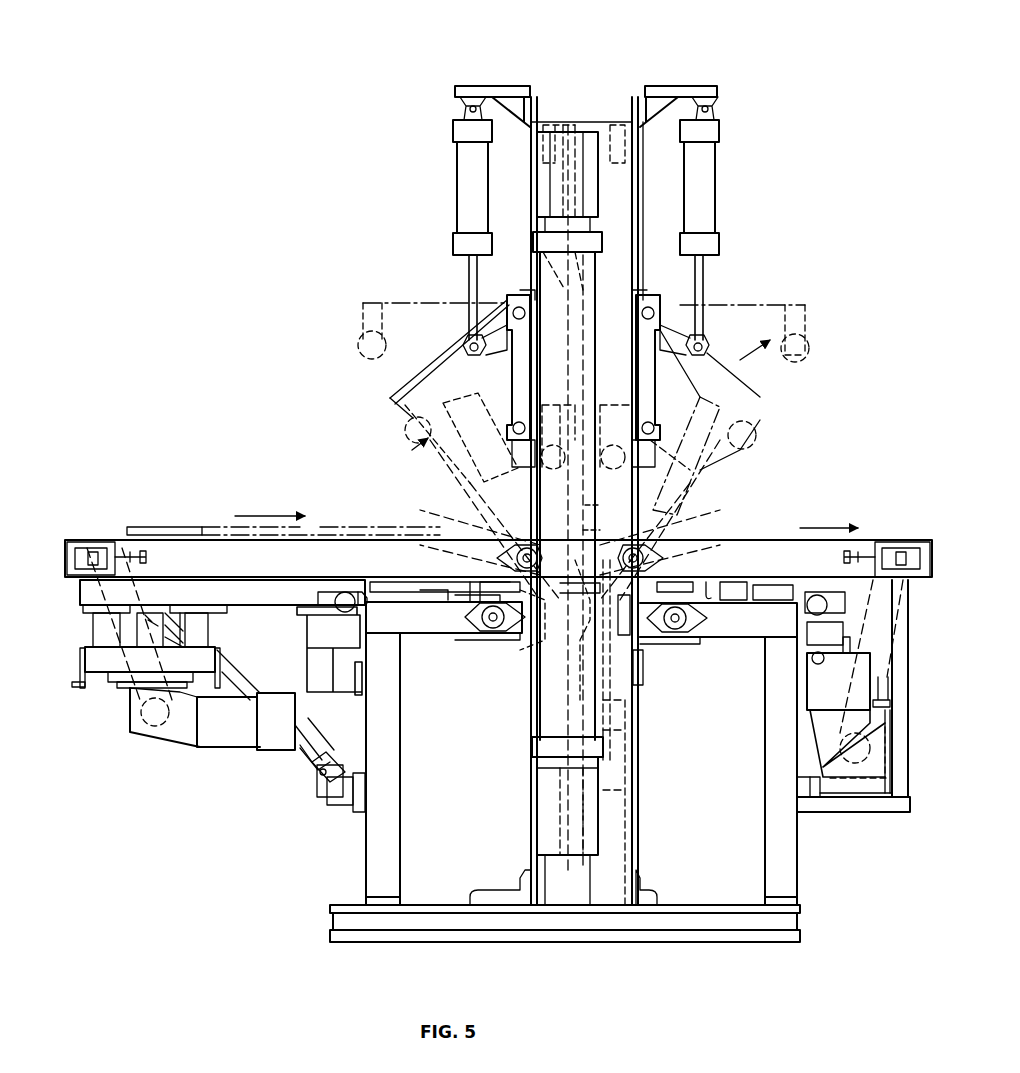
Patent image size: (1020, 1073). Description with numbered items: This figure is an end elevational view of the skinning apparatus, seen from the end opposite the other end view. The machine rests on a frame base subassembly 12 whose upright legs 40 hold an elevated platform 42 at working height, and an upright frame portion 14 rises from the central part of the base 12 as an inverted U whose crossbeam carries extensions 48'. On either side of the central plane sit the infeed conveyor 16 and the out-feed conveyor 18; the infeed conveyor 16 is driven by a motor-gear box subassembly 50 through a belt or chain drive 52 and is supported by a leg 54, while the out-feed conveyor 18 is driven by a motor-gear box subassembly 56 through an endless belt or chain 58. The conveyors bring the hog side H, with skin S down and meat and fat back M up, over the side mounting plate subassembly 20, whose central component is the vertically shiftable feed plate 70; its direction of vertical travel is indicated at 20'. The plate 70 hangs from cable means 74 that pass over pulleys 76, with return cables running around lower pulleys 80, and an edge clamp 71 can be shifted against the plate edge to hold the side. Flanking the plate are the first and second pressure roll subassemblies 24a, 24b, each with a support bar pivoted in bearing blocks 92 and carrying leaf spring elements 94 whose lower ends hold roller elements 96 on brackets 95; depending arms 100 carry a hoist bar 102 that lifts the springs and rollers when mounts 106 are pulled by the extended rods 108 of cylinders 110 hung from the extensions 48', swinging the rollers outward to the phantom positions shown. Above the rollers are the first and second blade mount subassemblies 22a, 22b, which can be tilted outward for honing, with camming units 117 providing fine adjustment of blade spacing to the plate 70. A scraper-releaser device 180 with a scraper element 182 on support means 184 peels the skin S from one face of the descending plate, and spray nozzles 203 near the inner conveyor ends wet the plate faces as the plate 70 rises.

The frame base subassembly 12 is at (405, 855).
The upright frame portion 14 is at (578, 114).
The infeed conveyor subassembly 16 is at (498, 576).
The out-feed conveyor subassembly 18 is at (748, 540).
The side mounting plate subassembly 20 is at (605, 660).
The spindle axis direction 20' is at (572, 513).
The first blade mount subassembly 22a is at (450, 424).
The second blade mount subassembly 22b is at (722, 425).
The first pressure roll subassembly 24a is at (515, 365).
The second pressure roll subassembly 24b is at (800, 305).
The upright legs 40 is at (398, 730).
The elevated platform 42 is at (425, 620).
The extensions of frame member 48' is at (585, 82).
The electrical motor-gear box subassembly 50 is at (222, 728).
The belt or chain drive 52 is at (133, 697).
The leg 54 is at (230, 668).
The motor-gear box subassembly 56 is at (827, 700).
The endless belt or chain 58 is at (895, 640).
The feed plate 70 is at (640, 527).
The edge clamp 71 is at (640, 500).
The cable means 74 is at (530, 240).
The pulley 76 is at (560, 130).
The lower pulleys 80 is at (625, 808).
The bearing blocks 92 is at (515, 298).
The leaf spring elements 94 is at (470, 300).
The brackets 95 is at (525, 475).
The roller elements 96 is at (358, 345).
The depending arms 100 is at (515, 381).
The hoist bar 102 is at (500, 430).
The mounts 106 is at (395, 320).
The extended rod 108 is at (470, 268).
The cylinders 110 is at (470, 162).
The camming units 117 is at (345, 598).
The scraper-releaser device 180 is at (640, 682).
The scraper element 182 is at (630, 620).
The support means 184 is at (620, 785).
The spray nozzles 203 is at (505, 560).
The meat and fat back M is at (142, 527).
The skin S is at (180, 548).
The hog side H is at (218, 527).